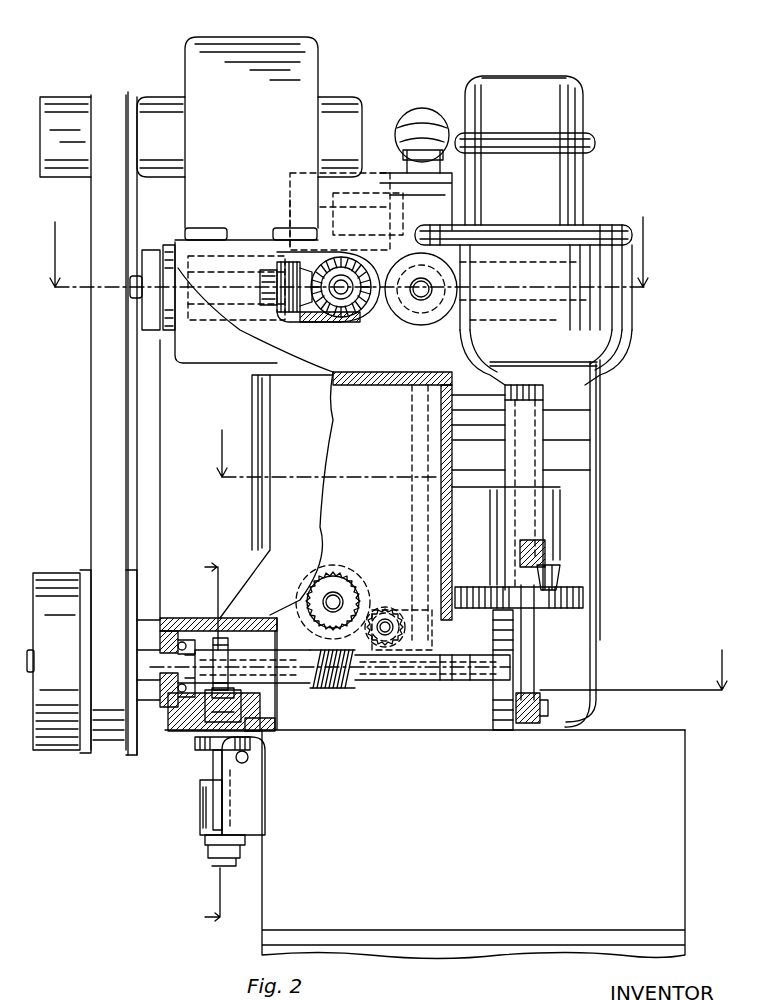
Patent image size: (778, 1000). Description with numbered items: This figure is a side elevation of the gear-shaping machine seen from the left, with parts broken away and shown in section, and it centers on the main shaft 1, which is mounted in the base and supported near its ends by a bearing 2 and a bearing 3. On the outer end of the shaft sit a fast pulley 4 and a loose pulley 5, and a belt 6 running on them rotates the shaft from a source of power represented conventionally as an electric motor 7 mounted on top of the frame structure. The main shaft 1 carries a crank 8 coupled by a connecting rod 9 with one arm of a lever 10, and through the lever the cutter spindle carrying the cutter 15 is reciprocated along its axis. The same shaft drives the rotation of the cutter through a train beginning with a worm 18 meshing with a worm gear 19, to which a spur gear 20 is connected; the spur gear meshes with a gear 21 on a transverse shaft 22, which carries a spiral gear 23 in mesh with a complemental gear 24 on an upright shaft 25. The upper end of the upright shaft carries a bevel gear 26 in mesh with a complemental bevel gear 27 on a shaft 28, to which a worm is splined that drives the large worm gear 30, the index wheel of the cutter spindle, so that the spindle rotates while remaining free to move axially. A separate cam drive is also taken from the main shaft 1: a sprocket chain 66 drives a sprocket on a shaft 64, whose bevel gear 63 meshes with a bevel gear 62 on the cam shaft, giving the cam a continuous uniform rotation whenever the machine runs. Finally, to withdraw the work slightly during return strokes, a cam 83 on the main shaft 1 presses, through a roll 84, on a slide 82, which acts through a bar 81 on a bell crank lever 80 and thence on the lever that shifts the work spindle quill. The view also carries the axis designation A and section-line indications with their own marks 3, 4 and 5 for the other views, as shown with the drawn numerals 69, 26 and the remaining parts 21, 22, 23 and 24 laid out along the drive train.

The main shaft 1 is at (297, 673).
The bearing 2 is at (187, 612).
The bearing 3 is at (457, 750).
The fast pulley 4 is at (470, 545).
The loose pulley 5 is at (47, 772).
The belt 6 is at (102, 435).
The electric motor 7 is at (200, 58).
The crank 8 is at (518, 713).
The connecting rod 9 is at (525, 648).
The lever 10 is at (512, 510).
The cutter 15 is at (553, 570).
The worm 18 is at (337, 680).
The worm gear 19 is at (350, 588).
The spur gear 20 is at (350, 594).
The gear 21 is at (385, 612).
The transverse shaft 22 is at (392, 624).
The spiral gear 23 is at (412, 596).
The complemental gear 24 is at (458, 585).
The upright shaft 25 is at (415, 488).
The bevel gear 26 is at (470, 322).
The complemental bevel gear 27 is at (455, 268).
The shaft 28 is at (427, 289).
The large worm gear 30 is at (580, 240).
The bevel gear 62 is at (345, 320).
The bevel gear 63 is at (312, 325).
The shaft 64 is at (277, 303).
The sprocket chain 66 is at (160, 440).
The knob 69 is at (415, 128).
The bell crank lever 80 is at (245, 785).
The bar 81 is at (210, 762).
The slide 82 is at (236, 714).
The cam 83 is at (228, 643).
The roll 84 is at (234, 698).
The axis A is at (127, 752).